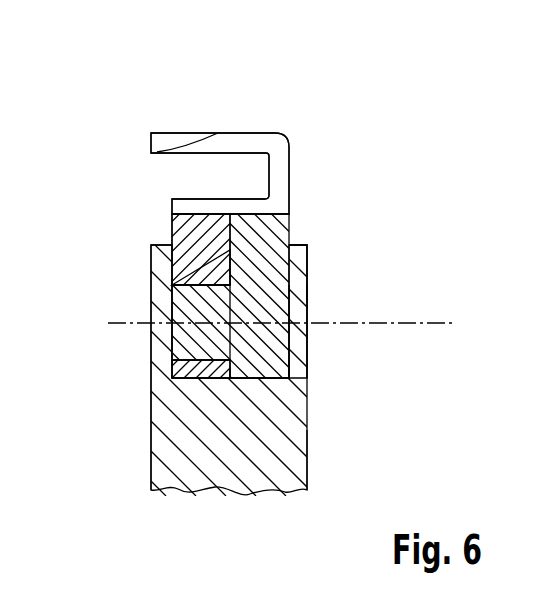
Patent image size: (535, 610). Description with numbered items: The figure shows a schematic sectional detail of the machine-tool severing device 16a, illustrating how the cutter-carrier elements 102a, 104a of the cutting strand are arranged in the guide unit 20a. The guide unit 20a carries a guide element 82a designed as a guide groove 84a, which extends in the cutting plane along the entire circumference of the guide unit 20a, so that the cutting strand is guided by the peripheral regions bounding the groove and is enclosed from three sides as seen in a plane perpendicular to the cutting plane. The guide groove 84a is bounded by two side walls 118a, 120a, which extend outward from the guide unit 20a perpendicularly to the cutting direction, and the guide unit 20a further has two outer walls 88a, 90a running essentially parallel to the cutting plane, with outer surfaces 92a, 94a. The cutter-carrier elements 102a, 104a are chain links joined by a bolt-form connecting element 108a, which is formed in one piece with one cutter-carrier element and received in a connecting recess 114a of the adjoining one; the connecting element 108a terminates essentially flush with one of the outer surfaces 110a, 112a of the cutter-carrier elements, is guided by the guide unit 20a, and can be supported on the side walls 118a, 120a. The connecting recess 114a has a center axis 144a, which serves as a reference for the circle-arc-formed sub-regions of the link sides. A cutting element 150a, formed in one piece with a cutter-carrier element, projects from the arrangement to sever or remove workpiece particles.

The machine-tool severing device 16a is at (402, 66).
The cutting element 150a is at (266, 133).
The outer surface 112a is at (170, 223).
The cutter-carrier element 102a is at (192, 262).
The side wall 120a is at (178, 288).
The connecting element 108a is at (171, 333).
The connecting recess 114a is at (175, 368).
The outer wall 90a is at (151, 398).
The outer surface 94a is at (149, 452).
The cutter-carrier element 104a is at (283, 228).
The outer surface 110a is at (292, 256).
The side wall 118a is at (289, 301).
The center axis 144a is at (442, 320).
The guide element 82a is at (282, 393).
The guide groove 84a is at (372, 380).
The outer surface 92a is at (308, 414).
The guide unit 20a is at (292, 450).
The outer wall 88a is at (307, 464).